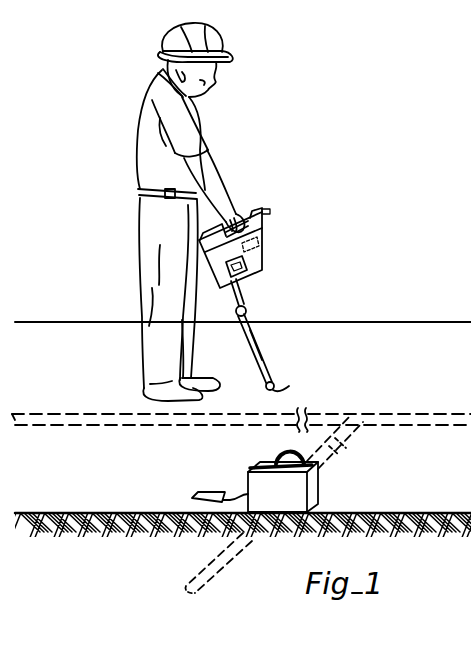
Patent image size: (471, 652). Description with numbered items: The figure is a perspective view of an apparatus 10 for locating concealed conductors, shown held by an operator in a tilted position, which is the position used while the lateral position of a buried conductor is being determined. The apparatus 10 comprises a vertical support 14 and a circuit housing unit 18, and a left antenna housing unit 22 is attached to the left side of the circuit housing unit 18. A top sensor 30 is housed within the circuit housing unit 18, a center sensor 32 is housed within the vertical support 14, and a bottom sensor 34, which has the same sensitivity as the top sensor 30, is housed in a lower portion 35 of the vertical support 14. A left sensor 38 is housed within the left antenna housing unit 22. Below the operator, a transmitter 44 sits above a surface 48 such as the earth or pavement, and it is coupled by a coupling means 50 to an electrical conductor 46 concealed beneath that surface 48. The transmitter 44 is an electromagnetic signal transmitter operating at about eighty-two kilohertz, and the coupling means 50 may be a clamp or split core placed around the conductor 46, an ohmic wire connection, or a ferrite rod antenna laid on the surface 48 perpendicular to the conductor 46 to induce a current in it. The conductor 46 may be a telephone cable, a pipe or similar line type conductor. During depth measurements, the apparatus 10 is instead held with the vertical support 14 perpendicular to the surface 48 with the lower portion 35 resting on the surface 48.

The concealed conductor locating apparatus 10 is at (243, 210).
The vertical support 14 is at (259, 353).
The circuit housing unit 18 is at (271, 211).
The left antenna housing unit 22 is at (255, 280).
The top sensor 30 is at (263, 240).
The center sensor 32 is at (259, 362).
The bottom sensor 34 is at (268, 392).
The lower portion 35 is at (283, 392).
The left sensor 38 is at (242, 292).
The transmitter 44 is at (322, 485).
The electrical conductor 46 is at (96, 413).
The surface 48 is at (450, 478).
The coupling means 50 is at (196, 493).